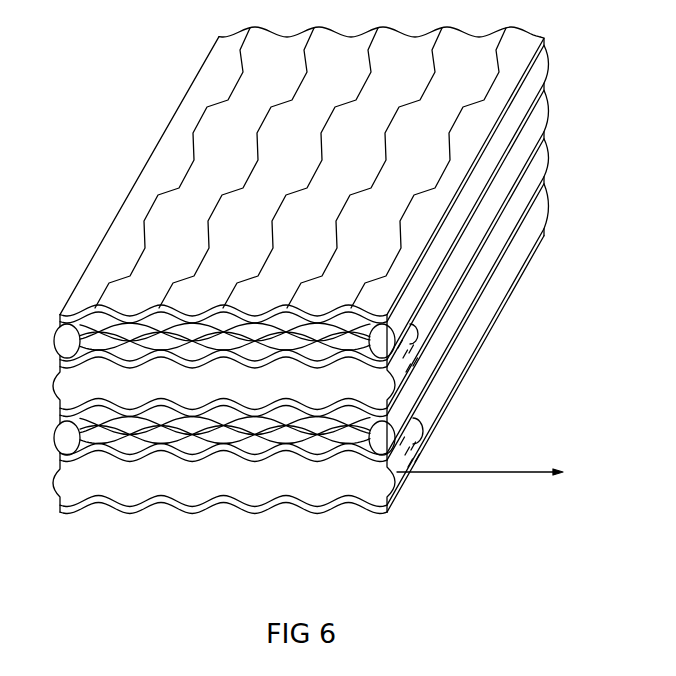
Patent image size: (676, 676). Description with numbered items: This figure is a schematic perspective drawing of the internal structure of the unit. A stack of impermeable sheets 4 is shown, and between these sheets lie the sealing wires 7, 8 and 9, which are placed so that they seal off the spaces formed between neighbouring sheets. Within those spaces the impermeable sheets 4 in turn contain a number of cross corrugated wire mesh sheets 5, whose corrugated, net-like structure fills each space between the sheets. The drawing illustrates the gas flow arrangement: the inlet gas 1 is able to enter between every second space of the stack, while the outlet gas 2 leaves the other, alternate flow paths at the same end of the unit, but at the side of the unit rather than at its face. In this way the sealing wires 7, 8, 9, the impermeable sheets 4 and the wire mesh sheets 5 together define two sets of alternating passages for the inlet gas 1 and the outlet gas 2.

The inlet gas 1 is at (304, 336).
The outlet gas 2 is at (418, 442).
The impermeable sheets 4 is at (470, 365).
The cross corrugated wire mesh sheets 5 is at (108, 330).
The sealing wire 7 is at (540, 70).
The sealing wire 8 is at (75, 385).
The sealing wire 9 is at (540, 213).